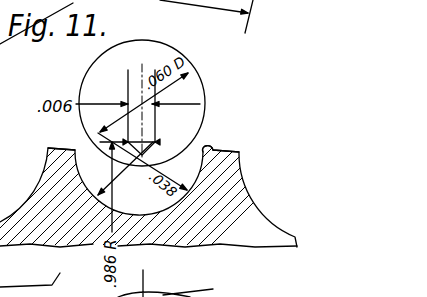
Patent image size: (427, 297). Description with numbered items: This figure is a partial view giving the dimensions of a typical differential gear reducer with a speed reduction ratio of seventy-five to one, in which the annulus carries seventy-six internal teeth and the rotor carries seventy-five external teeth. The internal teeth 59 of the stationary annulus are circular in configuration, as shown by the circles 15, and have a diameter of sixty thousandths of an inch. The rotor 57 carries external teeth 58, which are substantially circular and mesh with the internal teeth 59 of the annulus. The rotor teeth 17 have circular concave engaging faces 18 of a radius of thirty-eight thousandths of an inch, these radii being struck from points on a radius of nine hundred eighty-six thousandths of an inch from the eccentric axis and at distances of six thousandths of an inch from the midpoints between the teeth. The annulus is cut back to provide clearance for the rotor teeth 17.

The circles 15 is at (200, 128).
The rotor teeth 17 is at (47, 162).
The circular concave engaging faces 18 is at (210, 146).
The rotor 57 is at (213, 237).
The external teeth 58 is at (74, 195).
The internal teeth 59 is at (155, 55).